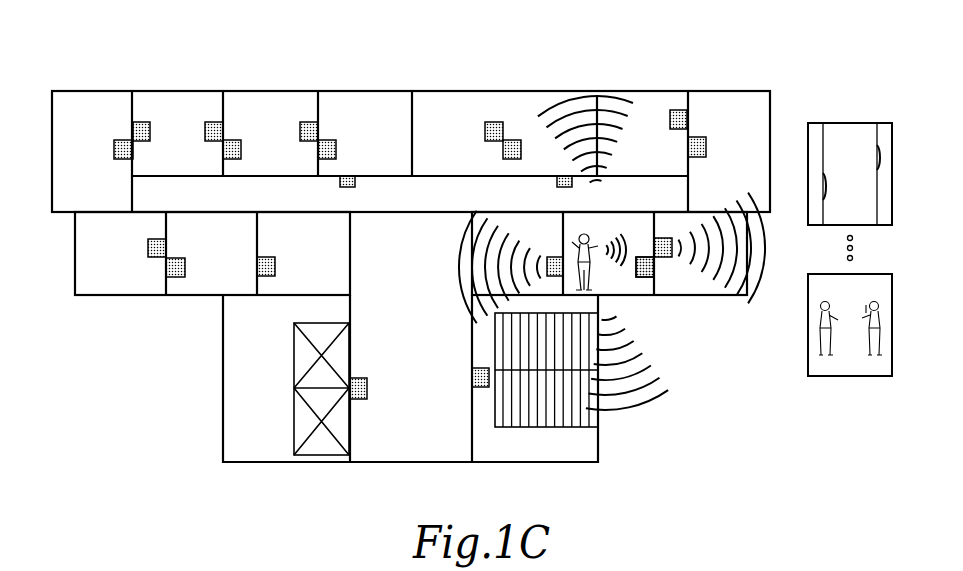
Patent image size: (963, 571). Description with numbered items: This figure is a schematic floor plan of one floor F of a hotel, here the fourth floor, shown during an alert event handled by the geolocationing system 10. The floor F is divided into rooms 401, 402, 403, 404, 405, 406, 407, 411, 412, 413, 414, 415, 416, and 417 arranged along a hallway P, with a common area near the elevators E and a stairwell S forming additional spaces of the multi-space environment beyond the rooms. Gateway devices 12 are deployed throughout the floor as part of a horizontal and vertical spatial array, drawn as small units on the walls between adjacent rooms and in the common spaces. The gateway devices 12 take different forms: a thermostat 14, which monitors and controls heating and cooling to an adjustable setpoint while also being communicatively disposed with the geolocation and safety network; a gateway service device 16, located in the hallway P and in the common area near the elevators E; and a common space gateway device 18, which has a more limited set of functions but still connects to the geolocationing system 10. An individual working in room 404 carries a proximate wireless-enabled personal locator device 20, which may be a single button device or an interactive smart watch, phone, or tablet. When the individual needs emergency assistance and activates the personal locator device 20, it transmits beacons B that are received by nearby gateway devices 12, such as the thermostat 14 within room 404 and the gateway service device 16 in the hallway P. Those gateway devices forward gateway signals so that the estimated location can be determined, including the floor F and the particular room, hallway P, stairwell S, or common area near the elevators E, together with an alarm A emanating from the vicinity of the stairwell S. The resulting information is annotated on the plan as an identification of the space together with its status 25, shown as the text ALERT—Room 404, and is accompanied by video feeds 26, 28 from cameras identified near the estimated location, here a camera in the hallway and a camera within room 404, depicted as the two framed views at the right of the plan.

The geolocationing system 10 is at (95, 72).
The gateway device 12 is at (140, 122).
The thermostat 14 is at (352, 187).
The gateway service device 16 is at (566, 187).
The common space gateway device 18 is at (488, 387).
The proximate wireless-enabled personal locator device 20 is at (594, 252).
The status 25 is at (573, 500).
The video feed 26 is at (850, 123).
The video feed 28 is at (853, 376).
The room 401 is at (452, 143).
The room 402 is at (482, 228).
The room 403 is at (534, 135).
The room 404 is at (612, 275).
The room 405 is at (640, 135).
The room 406 is at (692, 275).
The room 407 is at (732, 150).
The room 411 is at (356, 116).
The room 412 is at (305, 272).
The room 413 is at (266, 143).
The room 414 is at (205, 246).
The room 415 is at (170, 125).
The room 416 is at (111, 275).
The room 417 is at (83, 151).
The alarm A is at (633, 412).
The beacon B is at (622, 243).
The common area near the elevators E is at (418, 441).
The floor F is at (773, 89).
The hallway P is at (418, 251).
The stairwell S is at (530, 409).